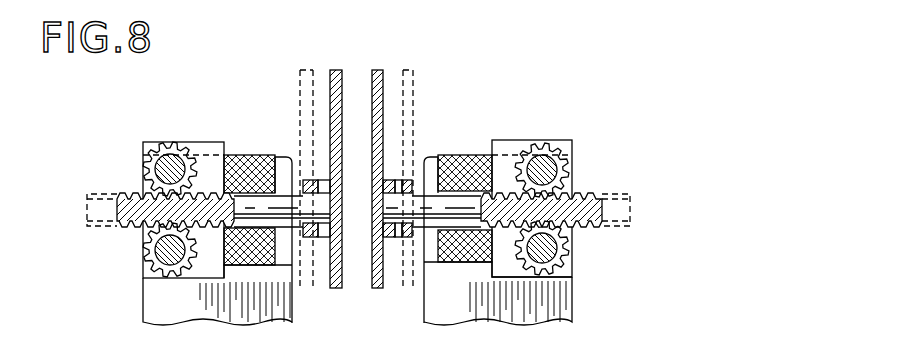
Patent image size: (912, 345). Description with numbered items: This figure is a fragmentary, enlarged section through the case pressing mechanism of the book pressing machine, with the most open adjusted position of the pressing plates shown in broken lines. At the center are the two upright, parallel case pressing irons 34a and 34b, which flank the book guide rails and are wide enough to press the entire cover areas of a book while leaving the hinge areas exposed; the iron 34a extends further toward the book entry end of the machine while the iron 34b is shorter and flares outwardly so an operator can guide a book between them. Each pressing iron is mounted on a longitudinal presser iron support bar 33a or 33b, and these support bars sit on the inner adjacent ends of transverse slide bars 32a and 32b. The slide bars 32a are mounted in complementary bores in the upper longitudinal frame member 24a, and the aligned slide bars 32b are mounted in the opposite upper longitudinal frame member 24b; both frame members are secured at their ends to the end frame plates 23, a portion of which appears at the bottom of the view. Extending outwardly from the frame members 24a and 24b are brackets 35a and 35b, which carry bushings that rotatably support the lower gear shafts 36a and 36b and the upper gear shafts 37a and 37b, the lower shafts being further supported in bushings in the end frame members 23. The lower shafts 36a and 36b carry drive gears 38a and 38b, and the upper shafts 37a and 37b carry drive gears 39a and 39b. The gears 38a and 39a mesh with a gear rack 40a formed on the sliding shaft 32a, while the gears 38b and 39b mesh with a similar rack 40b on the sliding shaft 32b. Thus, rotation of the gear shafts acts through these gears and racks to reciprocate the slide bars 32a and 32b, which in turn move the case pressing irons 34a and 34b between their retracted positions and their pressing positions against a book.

The end frame plate 23 is at (426, 306).
The upper longitudinal frame member 24a is at (245, 155).
The upper longitudinal frame member 24b is at (462, 155).
The slide bar 32a is at (282, 200).
The slide bar 32b is at (428, 197).
The presser iron support bar 33a is at (320, 237).
The presser iron support bar 33b is at (395, 237).
The case pressing iron 34a is at (336, 70).
The case pressing iron 34b is at (379, 70).
The bracket 35a is at (205, 143).
The bracket 35b is at (512, 145).
The lower gear shaft 36a is at (158, 250).
The lower gear shaft 36b is at (562, 258).
The upper gear shaft 37a is at (158, 165).
The upper gear shaft 37b is at (560, 165).
The drive gear 38a is at (148, 262).
The drive gear 38b is at (560, 248).
The drive gear 39a is at (160, 148).
The drive gear 39b is at (552, 148).
The gear rack 40a is at (121, 194).
The gear rack 40b is at (598, 193).